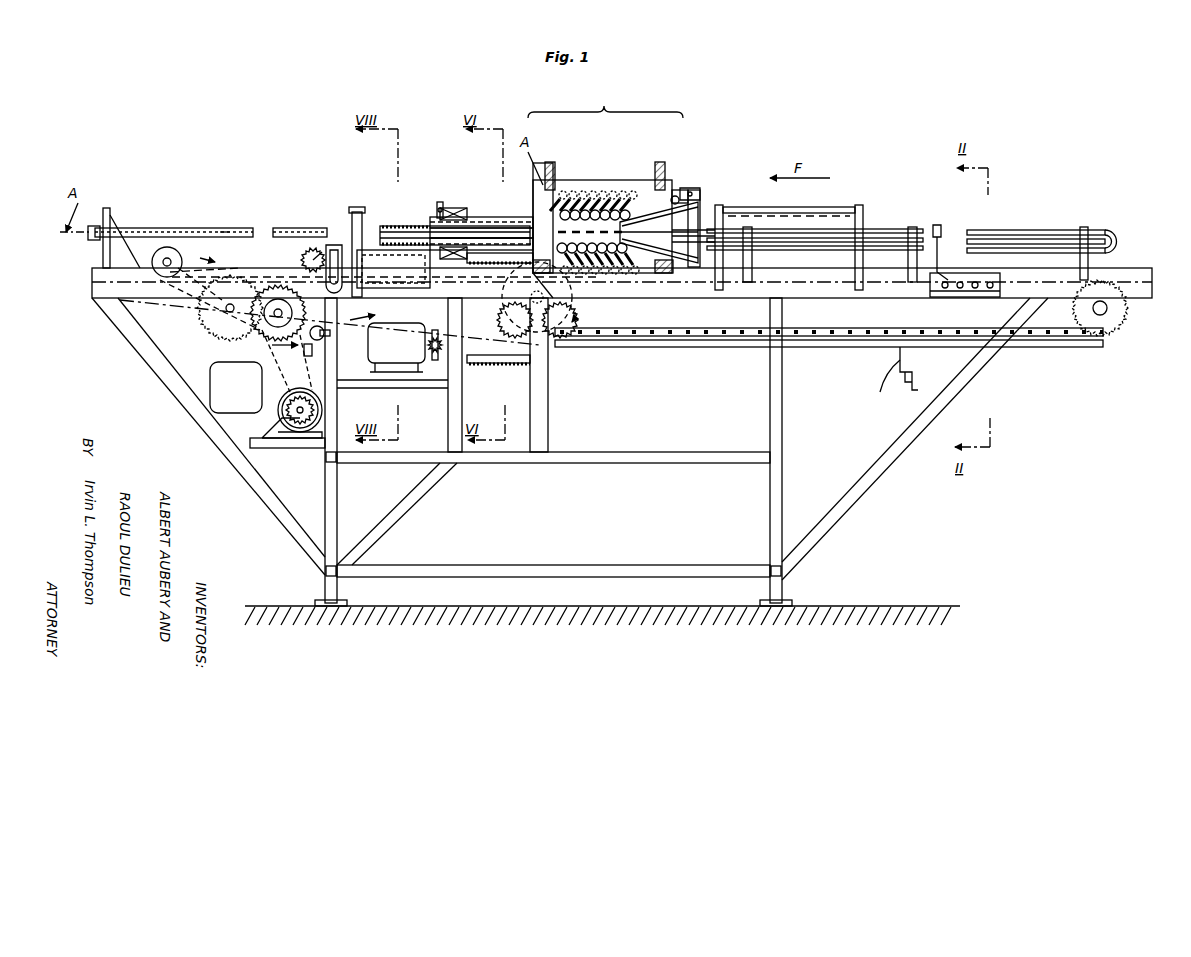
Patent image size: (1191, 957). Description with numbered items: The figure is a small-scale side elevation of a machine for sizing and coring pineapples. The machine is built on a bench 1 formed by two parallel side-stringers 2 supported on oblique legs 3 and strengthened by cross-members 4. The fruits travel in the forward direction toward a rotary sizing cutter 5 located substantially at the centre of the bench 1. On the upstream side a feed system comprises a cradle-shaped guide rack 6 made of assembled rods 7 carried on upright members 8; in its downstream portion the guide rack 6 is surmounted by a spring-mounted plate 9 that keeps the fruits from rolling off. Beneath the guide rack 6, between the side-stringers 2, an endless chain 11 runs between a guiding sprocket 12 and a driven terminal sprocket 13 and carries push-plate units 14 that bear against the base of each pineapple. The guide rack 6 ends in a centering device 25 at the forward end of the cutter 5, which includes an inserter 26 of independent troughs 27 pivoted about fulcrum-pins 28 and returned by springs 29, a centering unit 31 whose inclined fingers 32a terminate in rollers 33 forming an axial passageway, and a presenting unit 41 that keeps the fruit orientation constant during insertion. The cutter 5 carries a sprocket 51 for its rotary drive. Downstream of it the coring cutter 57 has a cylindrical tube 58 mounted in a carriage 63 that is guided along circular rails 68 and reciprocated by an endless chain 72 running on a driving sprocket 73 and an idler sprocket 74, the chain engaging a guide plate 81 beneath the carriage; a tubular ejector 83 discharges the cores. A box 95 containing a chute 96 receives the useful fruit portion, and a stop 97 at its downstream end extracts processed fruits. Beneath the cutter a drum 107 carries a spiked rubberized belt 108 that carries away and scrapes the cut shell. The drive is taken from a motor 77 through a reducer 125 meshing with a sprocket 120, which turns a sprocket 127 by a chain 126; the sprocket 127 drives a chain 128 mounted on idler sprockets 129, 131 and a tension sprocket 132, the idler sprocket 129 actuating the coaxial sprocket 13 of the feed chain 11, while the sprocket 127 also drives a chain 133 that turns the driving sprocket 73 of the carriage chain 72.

The bench 1 is at (1128, 270).
The side-stringers 2 is at (120, 290).
The oblique legs 3 is at (782, 418).
The cross-members 4 is at (595, 455).
The rotary sizing cutter 5 is at (478, 218).
The guide rack 6 is at (880, 228).
The rods 7 is at (1012, 250).
The upright members 8 is at (752, 258).
The spring-mounted plate 9 is at (775, 207).
The endless chain 11 is at (700, 336).
The sprocket 12 is at (1110, 320).
The terminal sprocket 13 is at (510, 312).
The push-plate units 14 is at (940, 235).
The centering device 25 is at (605, 104).
The inserter 26 is at (647, 228).
The troughs 27 is at (690, 250).
The fulcrum-pins 28 is at (677, 197).
The springs 29 is at (695, 200).
The centering unit 31 is at (602, 190).
The fingers 32a is at (622, 190).
The rollers 33 is at (585, 232).
The presenting unit 41 is at (545, 220).
The sprocket 51 is at (441, 200).
The coring cutter 57 is at (456, 210).
The cylindrical tube 58 is at (490, 236).
The carriage 63 is at (383, 225).
The rails 68 is at (205, 228).
The endless chain 72 is at (185, 228).
The driving sprocket 73 is at (160, 250).
The idler sprocket 74 is at (311, 248).
The motor 77 is at (220, 388).
The guide plate 81 is at (332, 245).
The tubular ejector 83 is at (285, 226).
The box 95 is at (398, 266).
The chute 96 is at (410, 310).
The stop 97 is at (357, 210).
The drum 107 is at (500, 365).
The rubberized belt 108 is at (492, 265).
The sprocket 120 is at (303, 430).
The reducer 125 is at (290, 390).
The chain 126 is at (300, 361).
The sprocket 127 is at (270, 330).
The chain 128 is at (400, 310).
The idler sprocket 129 is at (560, 338).
The idler sprocket 131 is at (215, 310).
The tension sprocket 132 is at (325, 333).
The chain 133 is at (225, 268).